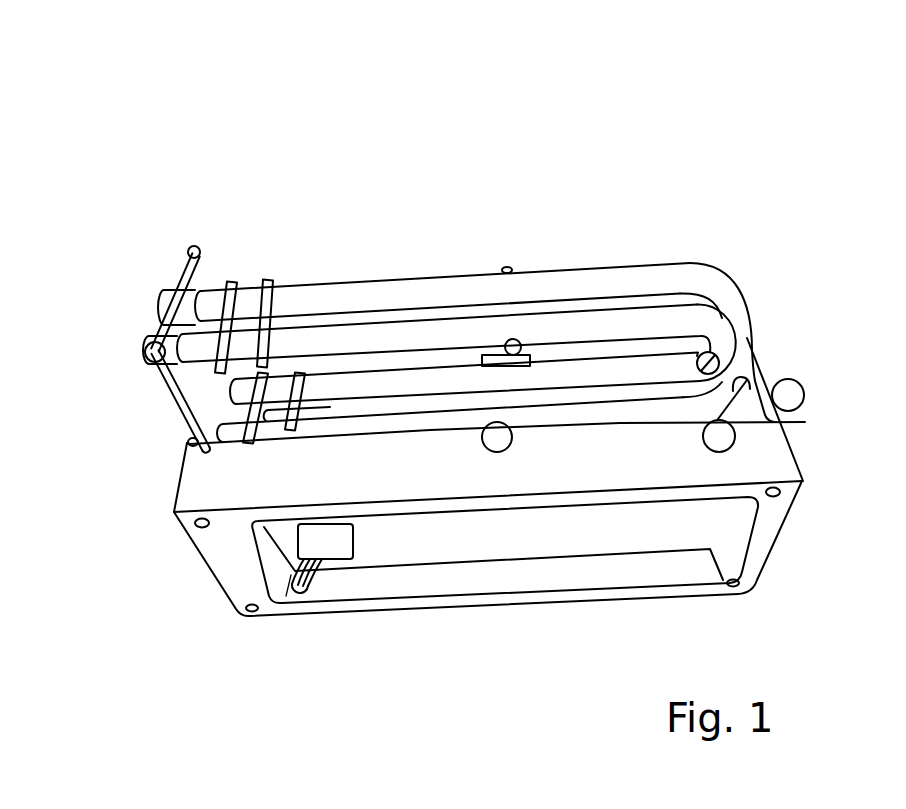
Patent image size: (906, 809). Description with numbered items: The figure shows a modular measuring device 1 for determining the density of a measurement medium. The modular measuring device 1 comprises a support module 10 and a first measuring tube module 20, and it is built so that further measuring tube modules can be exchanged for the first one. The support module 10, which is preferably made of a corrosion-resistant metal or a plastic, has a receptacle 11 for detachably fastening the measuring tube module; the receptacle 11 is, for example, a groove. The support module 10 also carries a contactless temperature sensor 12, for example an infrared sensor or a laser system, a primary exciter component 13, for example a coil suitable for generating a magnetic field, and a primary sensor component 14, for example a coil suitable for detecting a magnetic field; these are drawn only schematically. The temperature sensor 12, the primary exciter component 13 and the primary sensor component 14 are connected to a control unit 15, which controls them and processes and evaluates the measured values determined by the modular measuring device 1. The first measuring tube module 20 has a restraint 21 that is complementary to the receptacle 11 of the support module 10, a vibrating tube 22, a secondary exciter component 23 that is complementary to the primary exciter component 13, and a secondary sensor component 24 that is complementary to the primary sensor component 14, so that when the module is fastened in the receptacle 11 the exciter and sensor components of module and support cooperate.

The modular measuring device 1 is at (104, 99).
The support module 10 is at (242, 640).
The receptacle 11 is at (197, 441).
The contactless temperature sensor 12 is at (805, 423).
The primary exciter component 13 is at (803, 388).
The primary sensor component 14 is at (483, 450).
The control unit 15 is at (339, 572).
The first measuring tube module 20 is at (119, 301).
The restraint 21 is at (224, 263).
The vibrating tube 22 is at (751, 317).
The secondary exciter component 23 is at (724, 360).
The secondary sensor component 24 is at (497, 337).